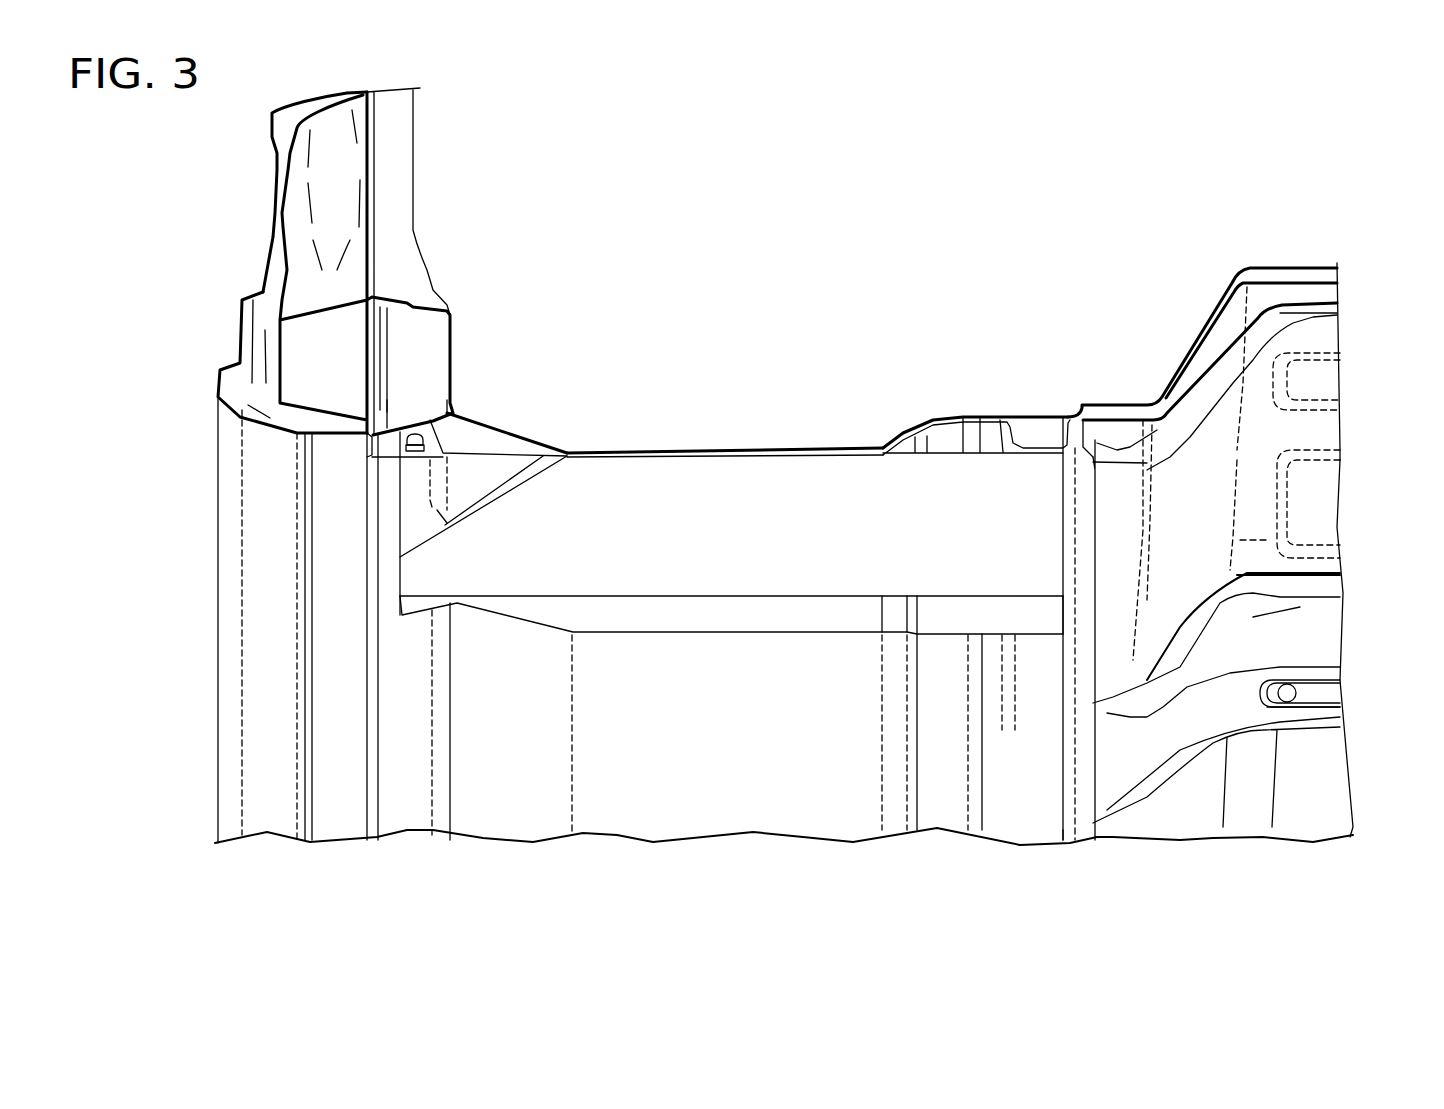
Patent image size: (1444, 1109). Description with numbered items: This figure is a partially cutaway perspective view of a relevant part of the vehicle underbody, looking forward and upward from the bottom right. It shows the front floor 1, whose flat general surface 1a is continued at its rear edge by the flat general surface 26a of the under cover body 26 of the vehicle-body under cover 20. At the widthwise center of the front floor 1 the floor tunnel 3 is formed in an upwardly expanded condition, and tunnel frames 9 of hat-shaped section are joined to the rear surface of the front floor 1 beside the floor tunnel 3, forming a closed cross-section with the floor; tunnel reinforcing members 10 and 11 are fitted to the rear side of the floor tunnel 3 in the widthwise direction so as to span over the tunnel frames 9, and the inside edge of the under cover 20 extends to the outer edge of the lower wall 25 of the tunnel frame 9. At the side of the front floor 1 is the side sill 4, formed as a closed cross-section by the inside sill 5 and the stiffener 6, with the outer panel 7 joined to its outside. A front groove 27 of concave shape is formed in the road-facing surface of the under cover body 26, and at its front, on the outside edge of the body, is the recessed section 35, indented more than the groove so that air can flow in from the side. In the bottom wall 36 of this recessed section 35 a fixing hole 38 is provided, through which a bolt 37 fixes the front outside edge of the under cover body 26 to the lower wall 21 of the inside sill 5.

The front floor 1 is at (1017, 413).
The flat general surface 1a is at (717, 770).
The floor tunnel 3 is at (1198, 338).
The side sill 4 is at (334, 272).
The inside sill 5 is at (453, 328).
The stiffener 6 is at (277, 337).
The outer panel 7 is at (220, 370).
The tunnel frame 9 is at (1073, 838).
The tunnel reinforcing member 10 is at (1323, 628).
The tunnel reinforcing member 11 is at (1333, 324).
The vehicle-body under cover 20 is at (863, 497).
The lower wall 21 is at (407, 807).
The lower wall 25 is at (1035, 815).
The under cover body 26 is at (752, 467).
The flat general surface 26a is at (780, 552).
The front groove 27 is at (493, 467).
The recessed section 35 is at (455, 467).
The bottom wall 36 is at (410, 497).
The bolt 37 is at (410, 450).
The fixing hole 38 is at (415, 448).